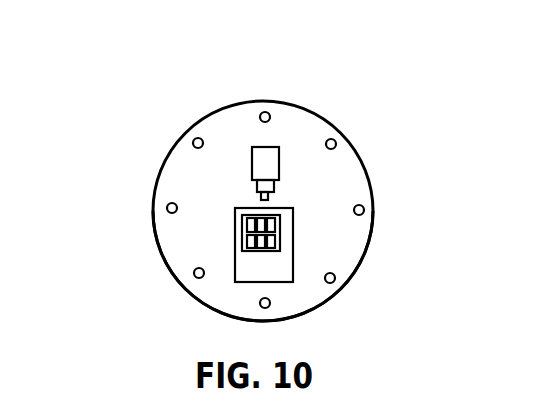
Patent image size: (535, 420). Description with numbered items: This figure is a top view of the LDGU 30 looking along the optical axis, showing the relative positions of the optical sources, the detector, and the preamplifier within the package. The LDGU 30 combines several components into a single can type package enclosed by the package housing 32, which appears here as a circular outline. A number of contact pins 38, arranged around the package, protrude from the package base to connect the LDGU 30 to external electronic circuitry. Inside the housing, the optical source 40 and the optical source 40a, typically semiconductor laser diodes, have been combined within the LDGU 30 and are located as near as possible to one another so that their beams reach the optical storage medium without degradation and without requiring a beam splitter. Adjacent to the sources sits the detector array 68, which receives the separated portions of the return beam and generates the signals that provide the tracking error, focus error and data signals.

The LDGU 30 is at (162, 110).
The package housing 32 is at (333, 288).
The contact pins 38 is at (327, 141).
The optical source 40 is at (270, 196).
The optical source 40a is at (303, 193).
The detector array 68 is at (242, 243).